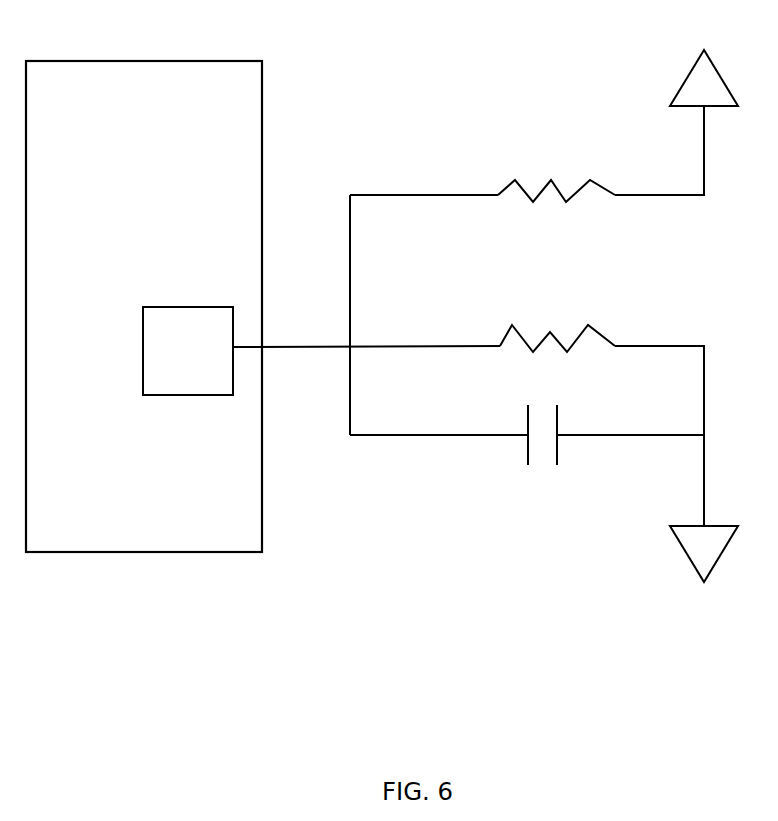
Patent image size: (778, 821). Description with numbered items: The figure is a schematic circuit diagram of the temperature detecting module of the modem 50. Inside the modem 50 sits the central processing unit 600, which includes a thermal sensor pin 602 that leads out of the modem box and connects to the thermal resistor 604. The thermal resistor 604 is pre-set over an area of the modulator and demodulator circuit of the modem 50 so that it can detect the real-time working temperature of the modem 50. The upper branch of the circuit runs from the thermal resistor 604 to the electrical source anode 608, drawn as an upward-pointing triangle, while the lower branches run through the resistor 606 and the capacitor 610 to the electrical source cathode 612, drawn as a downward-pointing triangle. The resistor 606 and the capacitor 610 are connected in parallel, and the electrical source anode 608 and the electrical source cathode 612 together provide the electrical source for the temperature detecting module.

The modem 50 is at (185, 60).
The central processing unit 600 is at (192, 306).
The thermal sensor pin 602 is at (235, 346).
The thermal resistor 604 is at (515, 178).
The resistor 606 is at (511, 326).
The electrical source anode 608 is at (697, 65).
The capacitor 610 is at (527, 447).
The electrical source cathode 612 is at (697, 527).